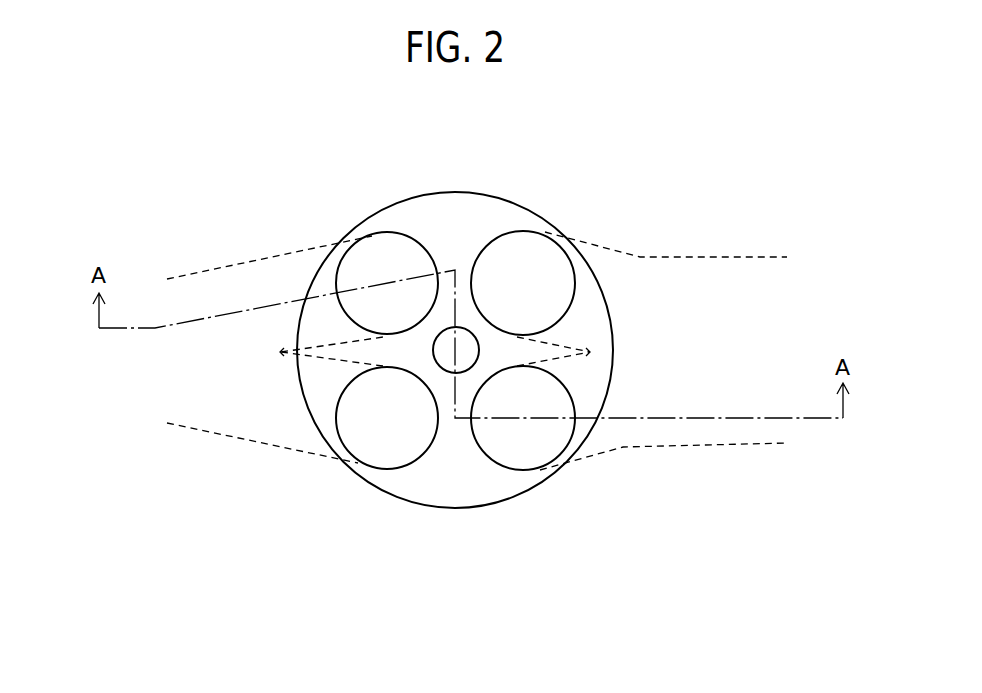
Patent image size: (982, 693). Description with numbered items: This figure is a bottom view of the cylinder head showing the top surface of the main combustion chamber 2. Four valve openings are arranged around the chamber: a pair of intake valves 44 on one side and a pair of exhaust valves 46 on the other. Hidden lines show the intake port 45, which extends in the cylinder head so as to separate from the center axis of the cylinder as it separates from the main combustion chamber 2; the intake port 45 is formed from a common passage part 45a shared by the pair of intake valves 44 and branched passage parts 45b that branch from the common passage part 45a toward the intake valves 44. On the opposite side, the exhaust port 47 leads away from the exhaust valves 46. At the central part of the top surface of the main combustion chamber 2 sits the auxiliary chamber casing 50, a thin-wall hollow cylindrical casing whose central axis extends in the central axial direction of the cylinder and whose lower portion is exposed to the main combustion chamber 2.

The main combustion chamber 2 is at (450, 208).
The pair of intake valves 44 is at (503, 248).
The pair of exhaust valves 46 is at (395, 248).
The auxiliary chamber casing 50 is at (447, 358).
The intake port 45 is at (620, 448).
The common passage part 45a is at (630, 283).
The branched passage parts 45b is at (585, 295).
The exhaust port 47 is at (238, 432).